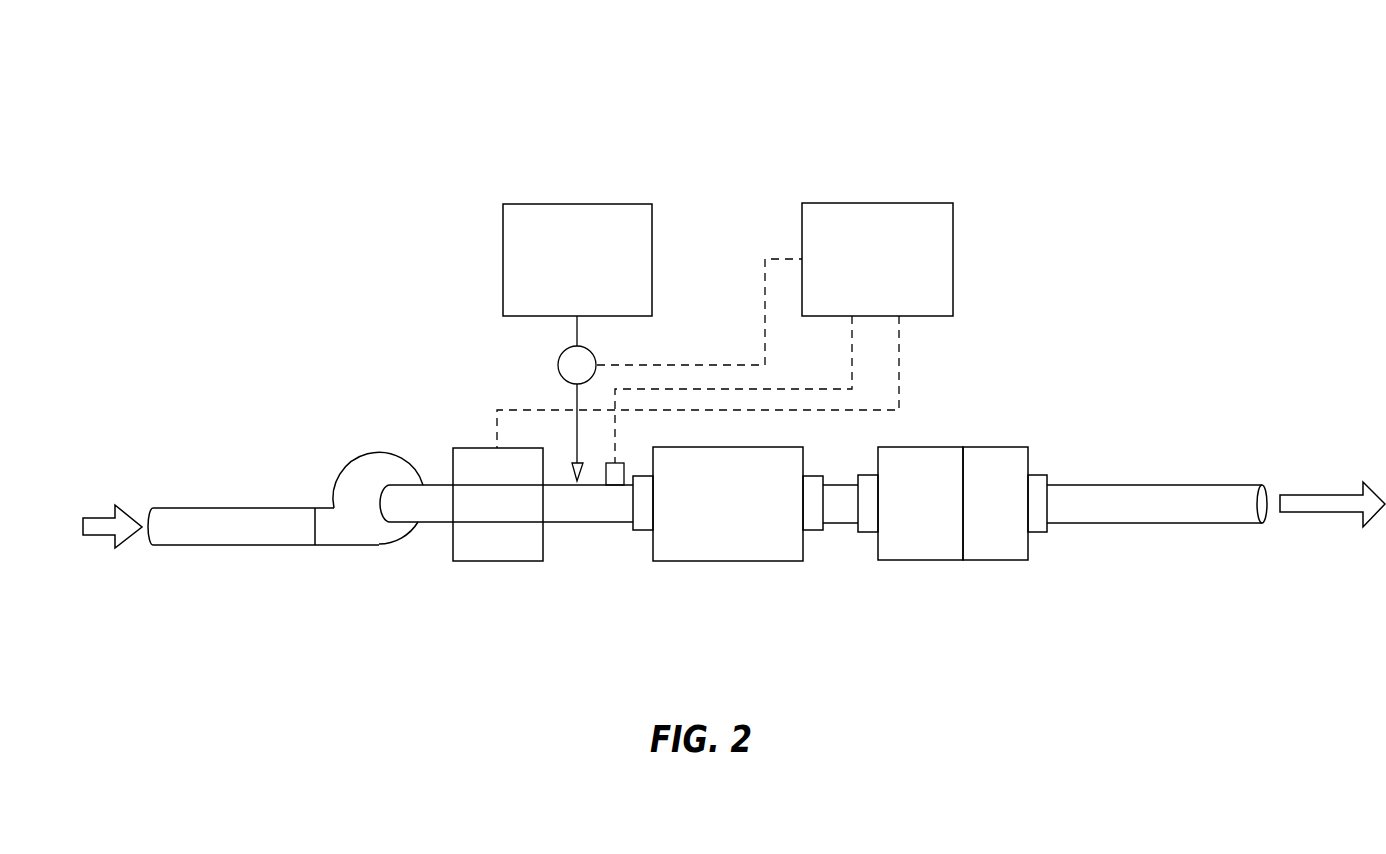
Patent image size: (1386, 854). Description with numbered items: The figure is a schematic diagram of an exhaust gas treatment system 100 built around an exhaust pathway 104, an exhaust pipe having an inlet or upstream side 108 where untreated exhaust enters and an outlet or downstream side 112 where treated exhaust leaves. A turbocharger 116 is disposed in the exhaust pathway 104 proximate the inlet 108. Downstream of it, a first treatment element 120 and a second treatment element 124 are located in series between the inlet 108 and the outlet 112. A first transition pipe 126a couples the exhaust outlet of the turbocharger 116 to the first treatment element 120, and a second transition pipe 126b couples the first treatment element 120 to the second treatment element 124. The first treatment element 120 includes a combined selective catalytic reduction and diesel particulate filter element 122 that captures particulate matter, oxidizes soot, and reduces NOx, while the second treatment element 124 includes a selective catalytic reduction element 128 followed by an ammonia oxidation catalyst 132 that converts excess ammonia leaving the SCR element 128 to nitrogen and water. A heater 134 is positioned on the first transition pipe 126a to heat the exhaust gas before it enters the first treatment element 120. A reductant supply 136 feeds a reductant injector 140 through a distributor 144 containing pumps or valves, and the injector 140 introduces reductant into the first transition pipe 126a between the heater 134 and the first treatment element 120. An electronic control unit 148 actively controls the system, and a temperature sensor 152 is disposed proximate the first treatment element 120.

The exhaust gas treatment system 100 is at (449, 86).
The exhaust pathway 104 is at (256, 567).
The inlet or upstream side 108 is at (142, 515).
The outlet or downstream side 112 is at (1265, 488).
The turbocharger 116 is at (343, 465).
The first treatment element 120 is at (728, 567).
The combined selective catalytic reduction and diesel particulate filter (SCR+F) ele 122 is at (727, 561).
The second treatment element 124 is at (986, 540).
The first transition pipe 126a is at (598, 523).
The second transition pipe 126b is at (840, 523).
The selective catalytic reduction (SCR) element 128 is at (920, 560).
The ammonia oxidation catalyst (AOC) 132 is at (995, 560).
The heater 134 is at (498, 561).
The reductant supply 136 is at (503, 255).
The reductant injector 140 is at (573, 466).
The distributor 144 is at (558, 364).
The electronic control unit 148 is at (953, 260).
The sensor 152 is at (625, 472).